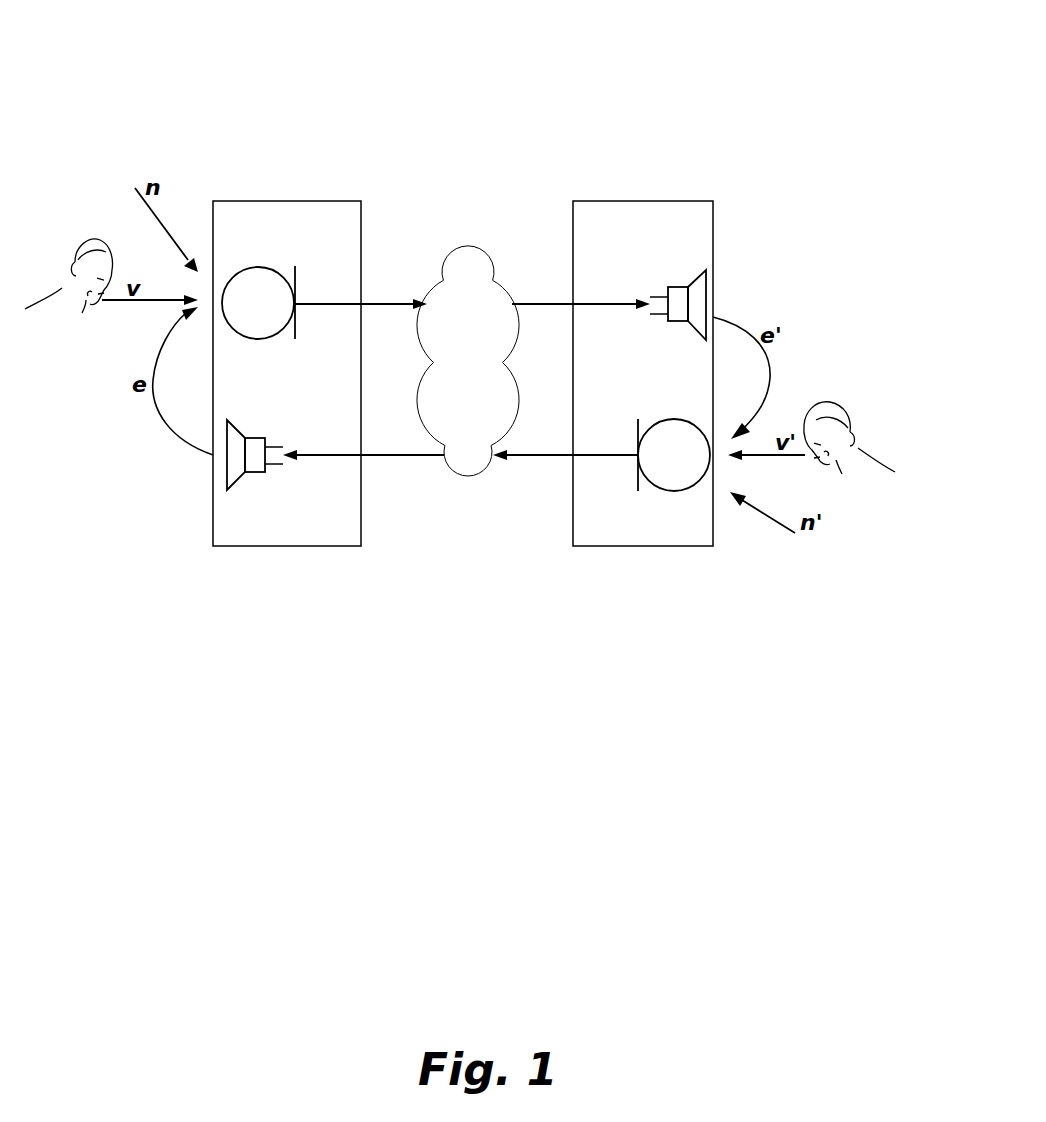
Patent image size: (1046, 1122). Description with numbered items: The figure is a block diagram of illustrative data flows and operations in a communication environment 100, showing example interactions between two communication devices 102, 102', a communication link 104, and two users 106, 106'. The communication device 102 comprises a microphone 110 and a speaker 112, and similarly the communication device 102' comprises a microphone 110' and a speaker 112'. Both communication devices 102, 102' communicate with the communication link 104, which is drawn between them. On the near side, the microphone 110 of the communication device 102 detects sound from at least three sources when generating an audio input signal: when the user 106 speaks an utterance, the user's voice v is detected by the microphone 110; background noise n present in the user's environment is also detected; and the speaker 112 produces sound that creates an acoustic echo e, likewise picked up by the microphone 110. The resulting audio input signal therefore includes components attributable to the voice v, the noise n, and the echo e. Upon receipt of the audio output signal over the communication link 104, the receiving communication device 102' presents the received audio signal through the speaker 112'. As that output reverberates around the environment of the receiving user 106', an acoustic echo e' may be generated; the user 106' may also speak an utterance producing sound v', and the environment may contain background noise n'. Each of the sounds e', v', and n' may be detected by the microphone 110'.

The communication environment 100 is at (585, 58).
The communication device 102 is at (297, 354).
The communication device 102' is at (643, 354).
The communication link 104 is at (470, 256).
The user 106 is at (69, 255).
The user 106' is at (849, 420).
The microphone 110 is at (260, 325).
The microphone 110' is at (674, 475).
The speaker 112 is at (265, 470).
The speaker 112' is at (673, 317).